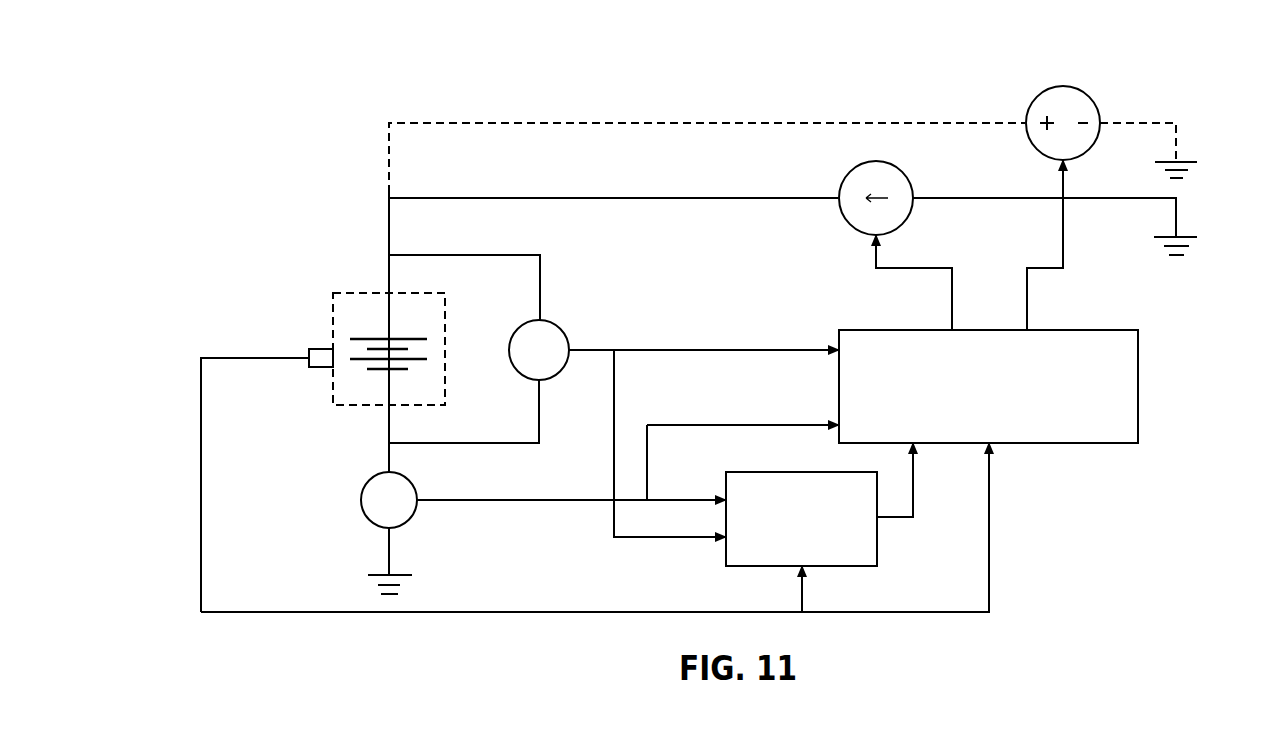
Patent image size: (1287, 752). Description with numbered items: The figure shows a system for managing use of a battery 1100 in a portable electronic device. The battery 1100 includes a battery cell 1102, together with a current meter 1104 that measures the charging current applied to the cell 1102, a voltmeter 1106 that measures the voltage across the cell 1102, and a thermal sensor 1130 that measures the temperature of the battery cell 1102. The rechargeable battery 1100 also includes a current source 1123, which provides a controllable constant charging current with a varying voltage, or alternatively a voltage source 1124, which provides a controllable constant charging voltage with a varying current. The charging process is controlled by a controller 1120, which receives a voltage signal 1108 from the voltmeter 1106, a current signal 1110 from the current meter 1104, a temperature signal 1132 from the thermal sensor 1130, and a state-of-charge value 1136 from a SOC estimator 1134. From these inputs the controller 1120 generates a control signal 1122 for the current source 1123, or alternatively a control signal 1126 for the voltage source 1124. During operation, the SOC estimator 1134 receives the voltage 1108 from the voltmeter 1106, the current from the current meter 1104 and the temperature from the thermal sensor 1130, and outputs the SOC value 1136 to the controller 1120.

The battery 1100 is at (693, 68).
The battery cell 1102 is at (352, 292).
The current meter 1104 is at (363, 480).
The voltmeter 1106 is at (556, 322).
The voltage signal 1108 is at (704, 431).
The current signal 1110 is at (571, 488).
The controller 1120 is at (988, 386).
The control signal 1122 is at (915, 267).
The current source 1123 is at (840, 185).
The voltage source 1124 is at (1080, 92).
The control signal 1126 is at (1067, 238).
The thermal sensor 1130 is at (317, 348).
The temperature signal 1132 is at (595, 527).
The SOC estimator 1134 is at (801, 519).
The SOC value 1136 is at (911, 506).